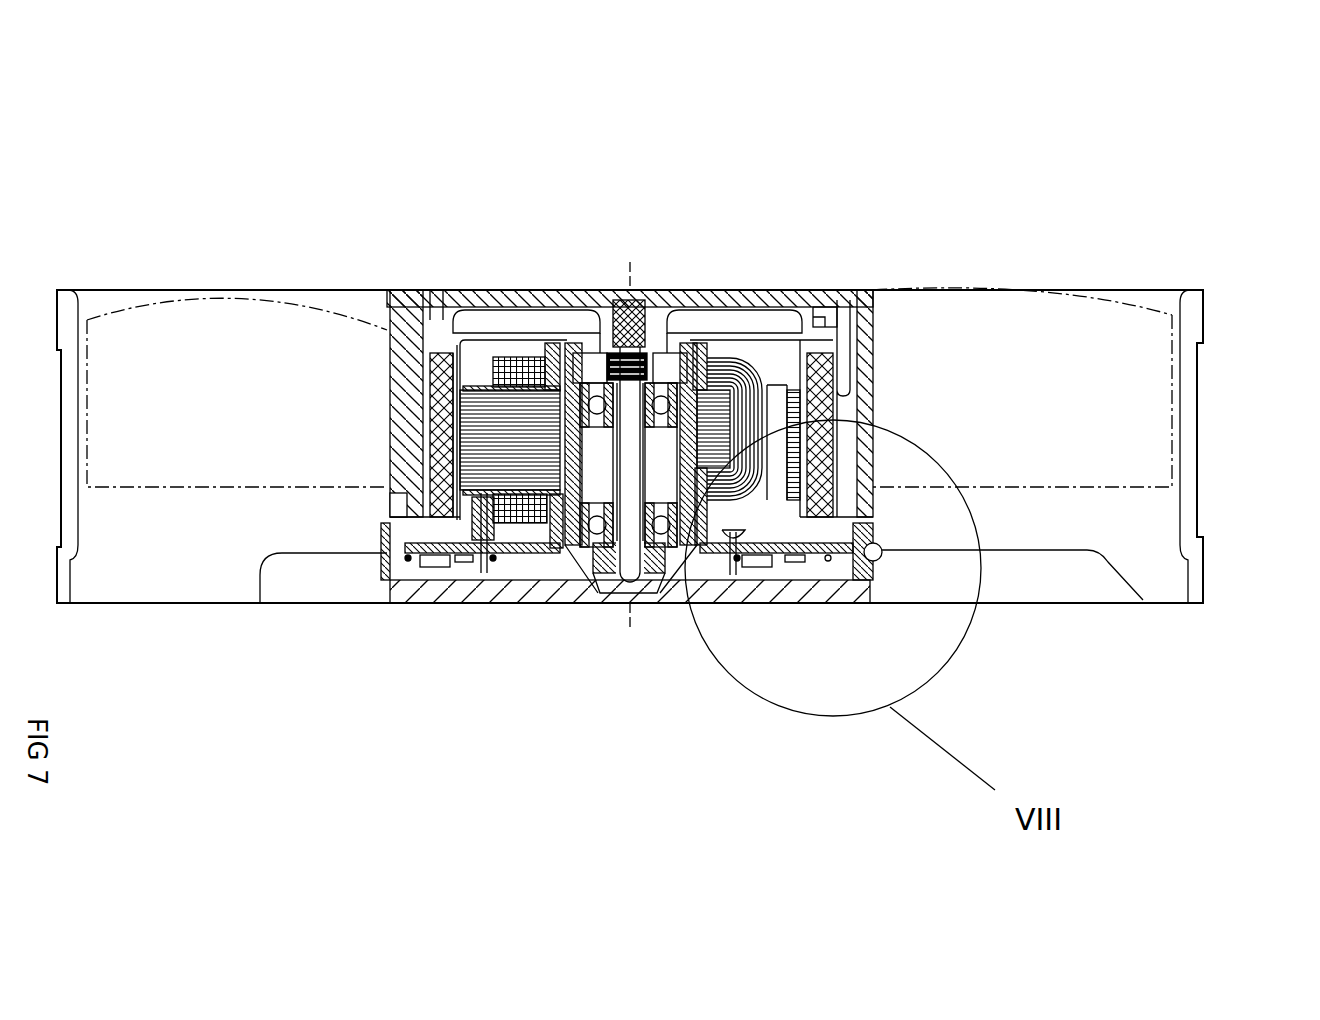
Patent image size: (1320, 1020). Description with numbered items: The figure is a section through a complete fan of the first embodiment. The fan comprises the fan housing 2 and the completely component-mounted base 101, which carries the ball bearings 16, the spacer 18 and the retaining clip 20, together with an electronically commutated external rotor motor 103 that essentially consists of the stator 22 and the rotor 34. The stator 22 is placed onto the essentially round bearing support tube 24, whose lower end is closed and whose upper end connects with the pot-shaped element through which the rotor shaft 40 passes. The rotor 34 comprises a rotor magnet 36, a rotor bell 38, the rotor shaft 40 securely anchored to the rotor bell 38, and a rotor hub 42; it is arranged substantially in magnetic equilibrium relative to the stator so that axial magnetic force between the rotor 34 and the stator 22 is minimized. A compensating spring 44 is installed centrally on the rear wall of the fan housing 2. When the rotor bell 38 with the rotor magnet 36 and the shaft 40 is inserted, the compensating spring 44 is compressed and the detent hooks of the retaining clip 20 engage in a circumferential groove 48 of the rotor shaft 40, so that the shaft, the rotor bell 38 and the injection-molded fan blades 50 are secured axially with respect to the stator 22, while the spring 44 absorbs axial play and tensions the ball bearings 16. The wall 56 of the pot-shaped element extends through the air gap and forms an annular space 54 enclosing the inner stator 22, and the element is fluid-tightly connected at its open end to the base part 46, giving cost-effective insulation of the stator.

The fan housing 2 is at (1190, 320).
The ball bearings 16 is at (768, 383).
The spacer 18 is at (873, 363).
The retaining clip 20 is at (600, 540).
The stator 22 is at (873, 327).
The bearing support tube 24 is at (569, 360).
The rotor 34 is at (496, 282).
The rotor magnet 36 is at (873, 452).
The rotor bell 38 is at (403, 320).
The rotor shaft 40 is at (633, 605).
The rotor hub 42 is at (636, 305).
The compensating spring 44 is at (677, 330).
The base part 46 is at (418, 585).
The circumferential groove 48 is at (607, 565).
The fan blades 50 is at (165, 318).
The annular space 54 is at (473, 357).
The wall 56 is at (548, 345).
The base 101 is at (575, 577).
The electronically commutated external rotor motor 103 is at (690, 258).